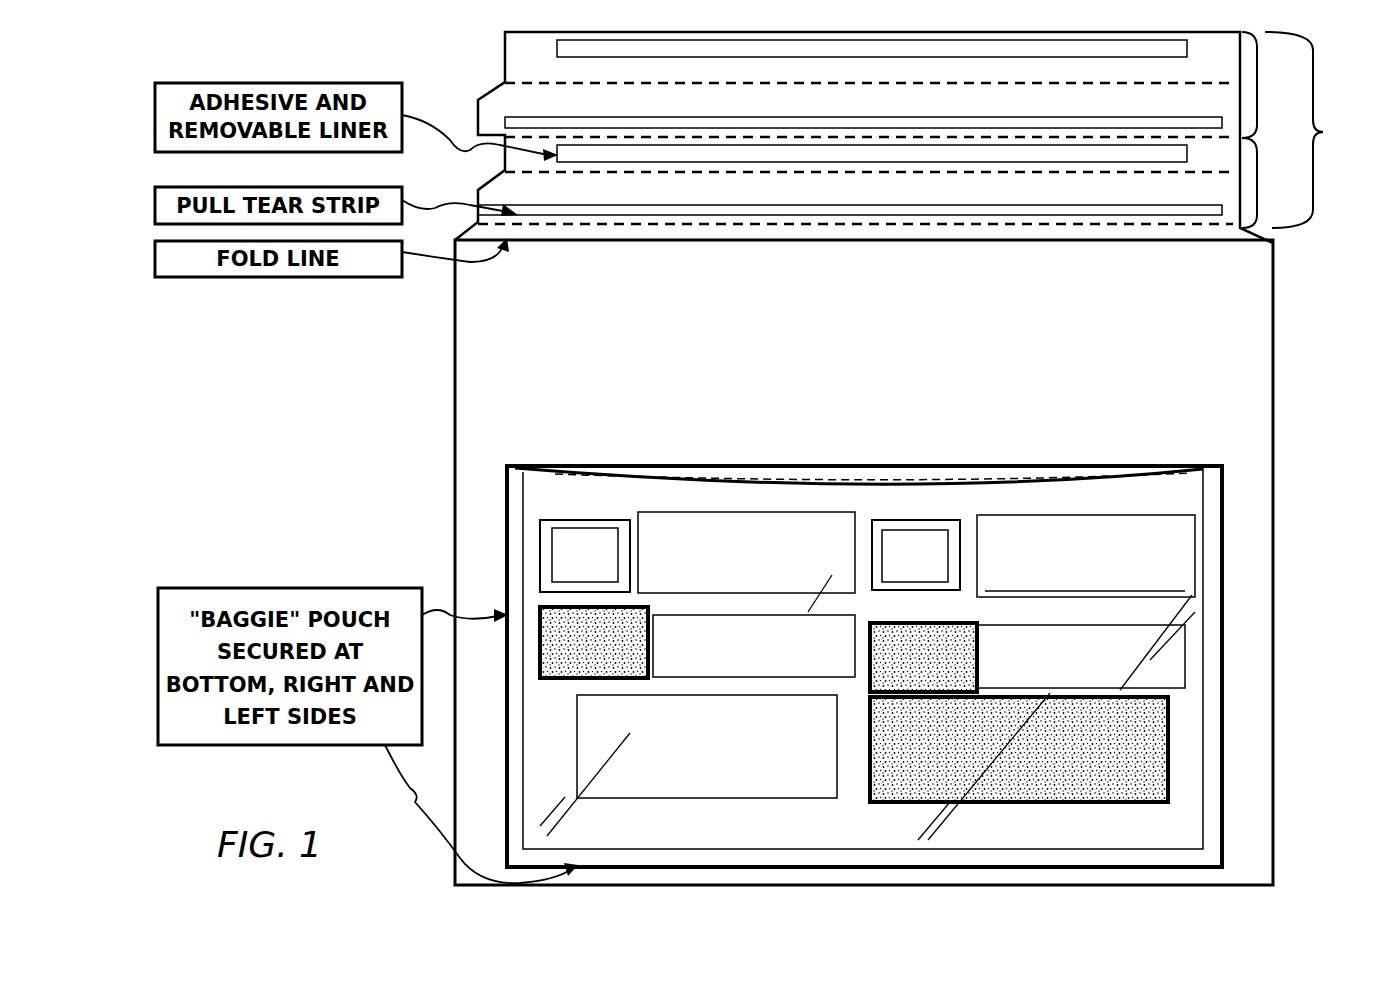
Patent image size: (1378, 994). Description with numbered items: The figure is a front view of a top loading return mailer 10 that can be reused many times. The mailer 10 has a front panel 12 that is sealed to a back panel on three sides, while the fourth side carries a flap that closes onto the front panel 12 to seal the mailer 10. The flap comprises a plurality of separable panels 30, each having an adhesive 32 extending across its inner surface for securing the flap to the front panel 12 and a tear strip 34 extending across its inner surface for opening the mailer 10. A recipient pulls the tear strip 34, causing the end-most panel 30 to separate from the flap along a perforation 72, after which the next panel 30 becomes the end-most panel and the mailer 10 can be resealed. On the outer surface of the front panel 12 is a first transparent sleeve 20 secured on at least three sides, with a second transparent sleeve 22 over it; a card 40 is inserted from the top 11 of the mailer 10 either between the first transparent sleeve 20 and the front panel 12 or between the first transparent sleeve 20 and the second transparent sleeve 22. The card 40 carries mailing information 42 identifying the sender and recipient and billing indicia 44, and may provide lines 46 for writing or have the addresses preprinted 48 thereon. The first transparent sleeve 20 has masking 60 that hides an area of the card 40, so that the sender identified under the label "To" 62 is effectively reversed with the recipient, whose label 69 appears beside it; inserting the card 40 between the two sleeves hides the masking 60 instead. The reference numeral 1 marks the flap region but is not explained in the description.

The closure flap assembly 1 is at (1325, 132).
The return mailer 10 is at (412, 42).
The top 11 is at (866, 316).
The front panel 12 is at (497, 328).
The first transparent sleeve 20 is at (803, 478).
The second transparent sleeve 22 is at (580, 470).
The separable panel 30 is at (1265, 95).
The adhesive 32 is at (1210, 68).
The tear strip 34 is at (512, 122).
The card 40 is at (1045, 468).
The mailing information 42 is at (740, 762).
The billing indicia 44 is at (705, 512).
The lines 46 is at (1158, 593).
The preprinted addresses 48 is at (790, 632).
The masking 60 is at (540, 667).
The label "To" 62 is at (575, 638).
The FROM indicator / rebound instruction 69 is at (960, 622).
The perforation 72 is at (567, 137).